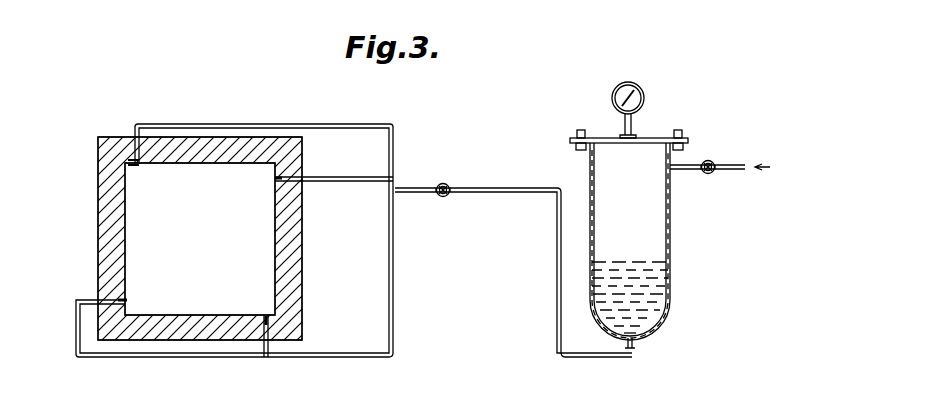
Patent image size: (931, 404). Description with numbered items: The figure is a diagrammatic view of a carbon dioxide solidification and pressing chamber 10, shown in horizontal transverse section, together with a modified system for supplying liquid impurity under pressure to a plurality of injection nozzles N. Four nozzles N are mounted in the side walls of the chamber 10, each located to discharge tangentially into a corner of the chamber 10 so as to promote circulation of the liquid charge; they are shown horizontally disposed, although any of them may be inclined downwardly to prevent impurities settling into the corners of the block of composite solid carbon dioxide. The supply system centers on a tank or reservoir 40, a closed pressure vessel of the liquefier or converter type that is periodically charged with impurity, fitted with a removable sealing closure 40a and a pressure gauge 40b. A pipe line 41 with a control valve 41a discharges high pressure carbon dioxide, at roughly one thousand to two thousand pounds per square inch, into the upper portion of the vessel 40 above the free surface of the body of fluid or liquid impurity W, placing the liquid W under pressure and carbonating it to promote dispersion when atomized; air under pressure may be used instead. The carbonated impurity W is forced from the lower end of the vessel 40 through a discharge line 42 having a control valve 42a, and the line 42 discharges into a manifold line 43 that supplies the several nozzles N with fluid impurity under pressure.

The solidification and pressing chamber 10 is at (112, 131).
The injection nozzle N is at (126, 161).
The tank or reservoir 40 is at (671, 220).
The removable sealing closure 40a is at (650, 138).
The pressure gauge 40b is at (634, 92).
The pipe line 41 is at (732, 160).
The control valve 41a is at (712, 172).
The discharge line 42 is at (484, 167).
The control valve 42a is at (447, 183).
The manifold line 43 is at (397, 312).
The fluid or liquid impurity W is at (655, 292).